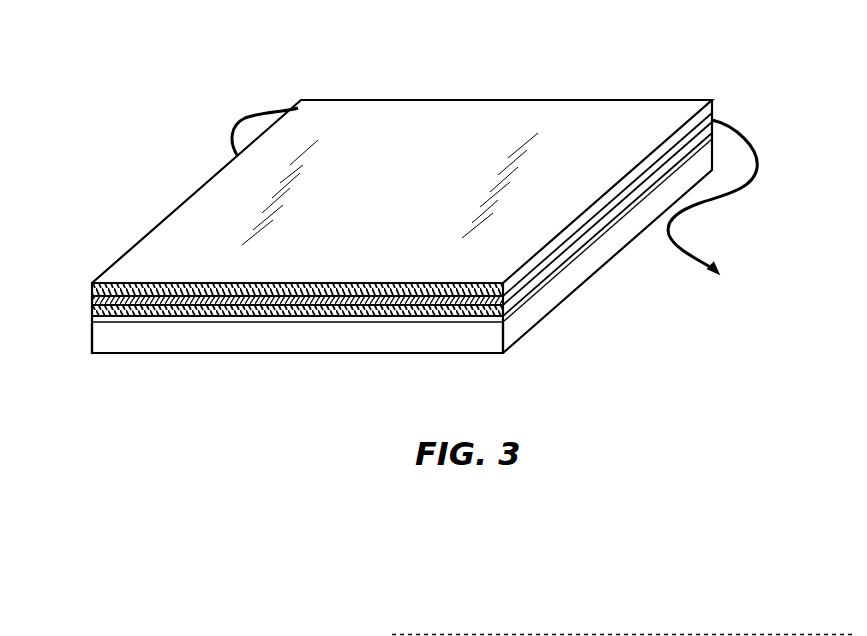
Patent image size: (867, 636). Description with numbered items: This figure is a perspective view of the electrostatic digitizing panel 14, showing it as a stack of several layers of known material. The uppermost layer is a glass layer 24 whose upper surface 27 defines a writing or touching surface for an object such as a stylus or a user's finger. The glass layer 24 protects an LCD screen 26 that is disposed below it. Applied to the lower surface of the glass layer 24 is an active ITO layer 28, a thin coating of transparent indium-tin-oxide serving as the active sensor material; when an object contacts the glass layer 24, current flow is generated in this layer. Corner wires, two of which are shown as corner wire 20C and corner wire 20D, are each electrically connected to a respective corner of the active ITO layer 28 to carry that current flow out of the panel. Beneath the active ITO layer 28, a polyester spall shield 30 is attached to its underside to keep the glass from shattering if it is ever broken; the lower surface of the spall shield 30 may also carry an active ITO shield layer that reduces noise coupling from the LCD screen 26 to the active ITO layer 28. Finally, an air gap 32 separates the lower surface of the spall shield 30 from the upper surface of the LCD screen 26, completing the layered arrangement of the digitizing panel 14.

The electrostatic digitizing panel 14 is at (144, 81).
The corner wire 20C is at (250, 117).
The corner wire 20D is at (690, 247).
The glass layer 24 is at (150, 292).
The LCD screen 26 is at (458, 338).
The upper surface 27 is at (407, 118).
The active ITO layer 28 is at (152, 312).
The polyester spall shield 30 is at (330, 308).
The air gap 32 is at (237, 320).